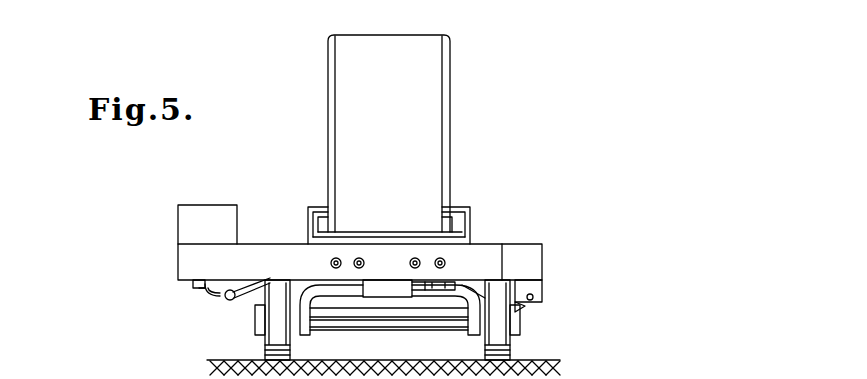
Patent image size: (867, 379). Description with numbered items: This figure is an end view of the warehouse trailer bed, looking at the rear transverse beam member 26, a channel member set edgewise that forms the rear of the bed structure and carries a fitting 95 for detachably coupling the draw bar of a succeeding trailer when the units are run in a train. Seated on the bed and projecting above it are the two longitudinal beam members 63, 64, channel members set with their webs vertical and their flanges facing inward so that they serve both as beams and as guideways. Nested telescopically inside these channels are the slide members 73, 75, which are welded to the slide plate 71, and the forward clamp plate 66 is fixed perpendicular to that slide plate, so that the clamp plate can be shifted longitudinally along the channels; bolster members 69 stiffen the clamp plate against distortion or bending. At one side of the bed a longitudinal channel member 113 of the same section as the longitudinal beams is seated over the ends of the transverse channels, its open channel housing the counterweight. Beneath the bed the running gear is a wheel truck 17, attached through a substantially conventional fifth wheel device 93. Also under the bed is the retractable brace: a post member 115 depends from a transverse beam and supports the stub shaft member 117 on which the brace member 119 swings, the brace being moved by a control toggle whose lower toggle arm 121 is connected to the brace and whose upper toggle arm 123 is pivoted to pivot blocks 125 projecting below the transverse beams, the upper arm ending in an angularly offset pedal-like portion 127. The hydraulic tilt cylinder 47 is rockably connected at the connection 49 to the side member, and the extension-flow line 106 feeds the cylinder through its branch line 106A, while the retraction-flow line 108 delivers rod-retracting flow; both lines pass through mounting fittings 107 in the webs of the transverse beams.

The forward clamp plate 66 is at (390, 151).
The bolster members 69 is at (332, 101).
The longitudinal beam member 64 is at (320, 208).
The longitudinal beam member 63 is at (468, 214).
The slide member 75 is at (318, 224).
The slide plate 71 is at (402, 235).
The slide member 73 is at (470, 239).
The longitudinal channel member 113 is at (178, 225).
The rear transverse beam member 26 is at (292, 269).
The retraction-flow line 108 is at (335, 282).
The mounting fitting 107 is at (446, 264).
The wheel truck 17 is at (369, 331).
The fifth wheel device 93 is at (357, 291).
The upper toggle arm 123 is at (418, 298).
The toggle arm 121 is at (497, 284).
The fitting 95 is at (383, 283).
The offset pedal-like portion 127 is at (419, 283).
The pivot blocks 125 is at (442, 279).
The post member 115 is at (538, 284).
The stub shaft member 117 is at (535, 298).
The brace member 119 is at (520, 307).
The rockable connection 49 is at (192, 283).
The tilt cylinder 47 is at (200, 289).
The branch line 106A is at (213, 298).
The extension-flow line 106 is at (255, 292).